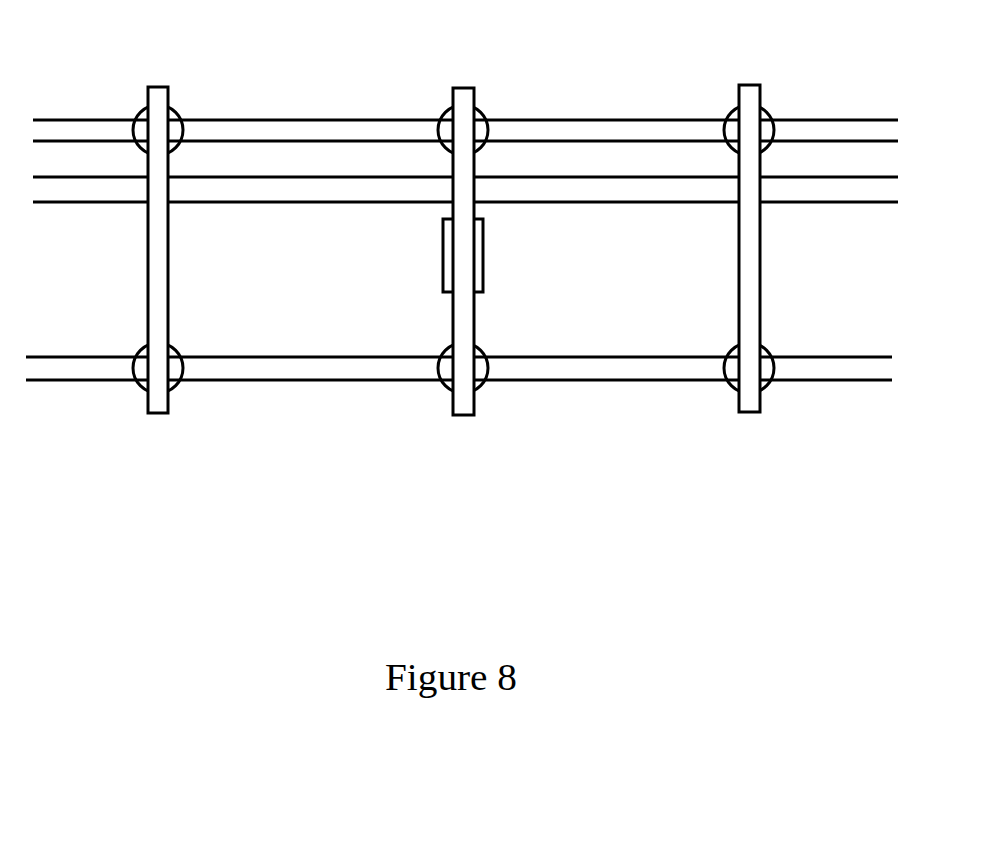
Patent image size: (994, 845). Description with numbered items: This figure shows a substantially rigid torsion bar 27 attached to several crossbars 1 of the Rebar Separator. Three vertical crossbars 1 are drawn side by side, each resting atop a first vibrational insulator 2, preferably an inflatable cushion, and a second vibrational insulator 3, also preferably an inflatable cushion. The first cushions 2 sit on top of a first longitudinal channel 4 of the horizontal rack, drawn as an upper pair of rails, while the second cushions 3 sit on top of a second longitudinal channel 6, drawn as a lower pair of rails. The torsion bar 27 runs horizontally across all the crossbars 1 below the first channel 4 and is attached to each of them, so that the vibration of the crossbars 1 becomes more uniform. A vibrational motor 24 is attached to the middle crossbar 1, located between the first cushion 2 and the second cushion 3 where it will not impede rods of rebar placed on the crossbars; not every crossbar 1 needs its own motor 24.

The crossbar 1 is at (157, 265).
The first vibrational insulator 2 is at (143, 125).
The second vibrational insulator 3 is at (143, 377).
The first longitudinal channel 4 is at (305, 130).
The second longitudinal channel 6 is at (625, 370).
The vibrational motor 24 is at (478, 252).
The substantially rigid torsion bar 27 is at (619, 188).